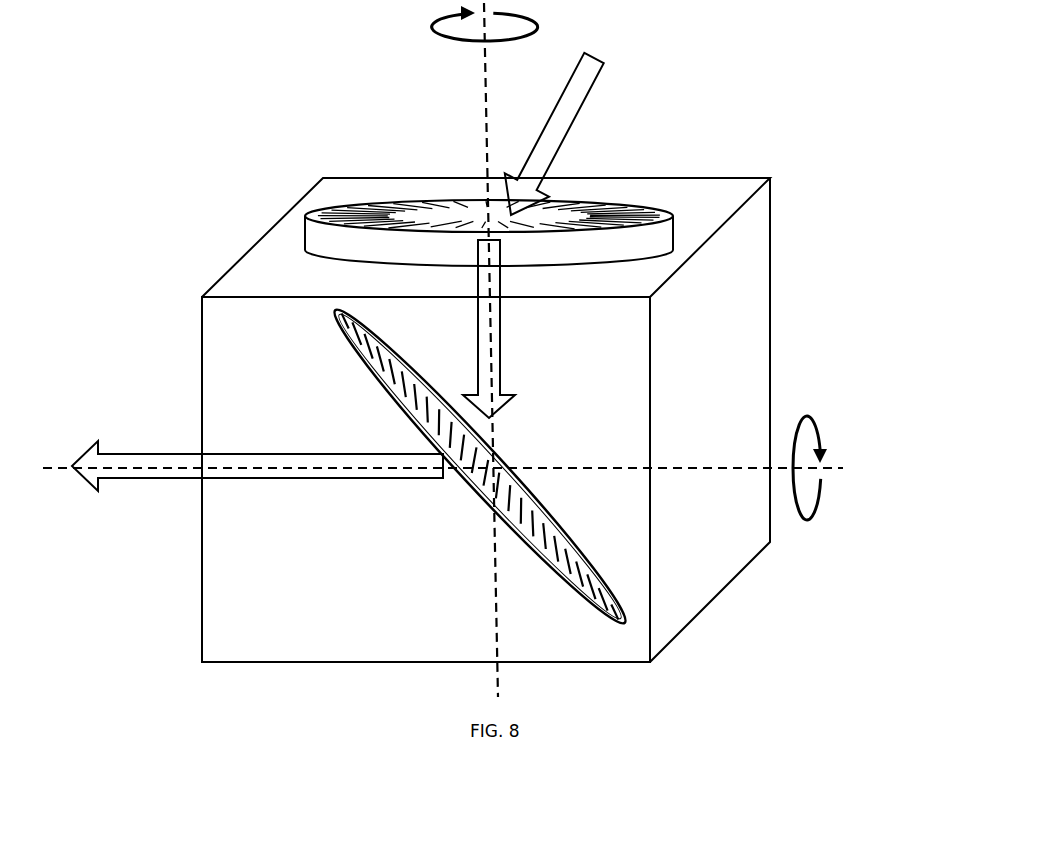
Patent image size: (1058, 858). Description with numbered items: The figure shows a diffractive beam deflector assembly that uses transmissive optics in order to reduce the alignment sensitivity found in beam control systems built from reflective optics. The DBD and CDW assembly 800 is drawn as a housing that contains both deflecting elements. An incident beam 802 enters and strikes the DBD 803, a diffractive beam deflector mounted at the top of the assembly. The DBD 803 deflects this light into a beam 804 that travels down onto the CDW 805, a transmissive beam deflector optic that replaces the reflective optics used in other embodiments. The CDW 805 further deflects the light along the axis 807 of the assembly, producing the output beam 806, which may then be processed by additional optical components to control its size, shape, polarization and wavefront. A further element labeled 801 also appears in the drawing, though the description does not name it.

The DBD and CDW assembly 800 is at (680, 610).
The first rotation axis 801 is at (477, 107).
The beam incident on DBD 802 is at (603, 60).
The DBD 803 is at (602, 213).
The beam deflected by the DBD 804 is at (502, 335).
The CDW 805 is at (532, 553).
The beam obtained by deflection by the CDW 806 is at (134, 462).
The axis of DBD and CDW assembly 807 is at (845, 468).